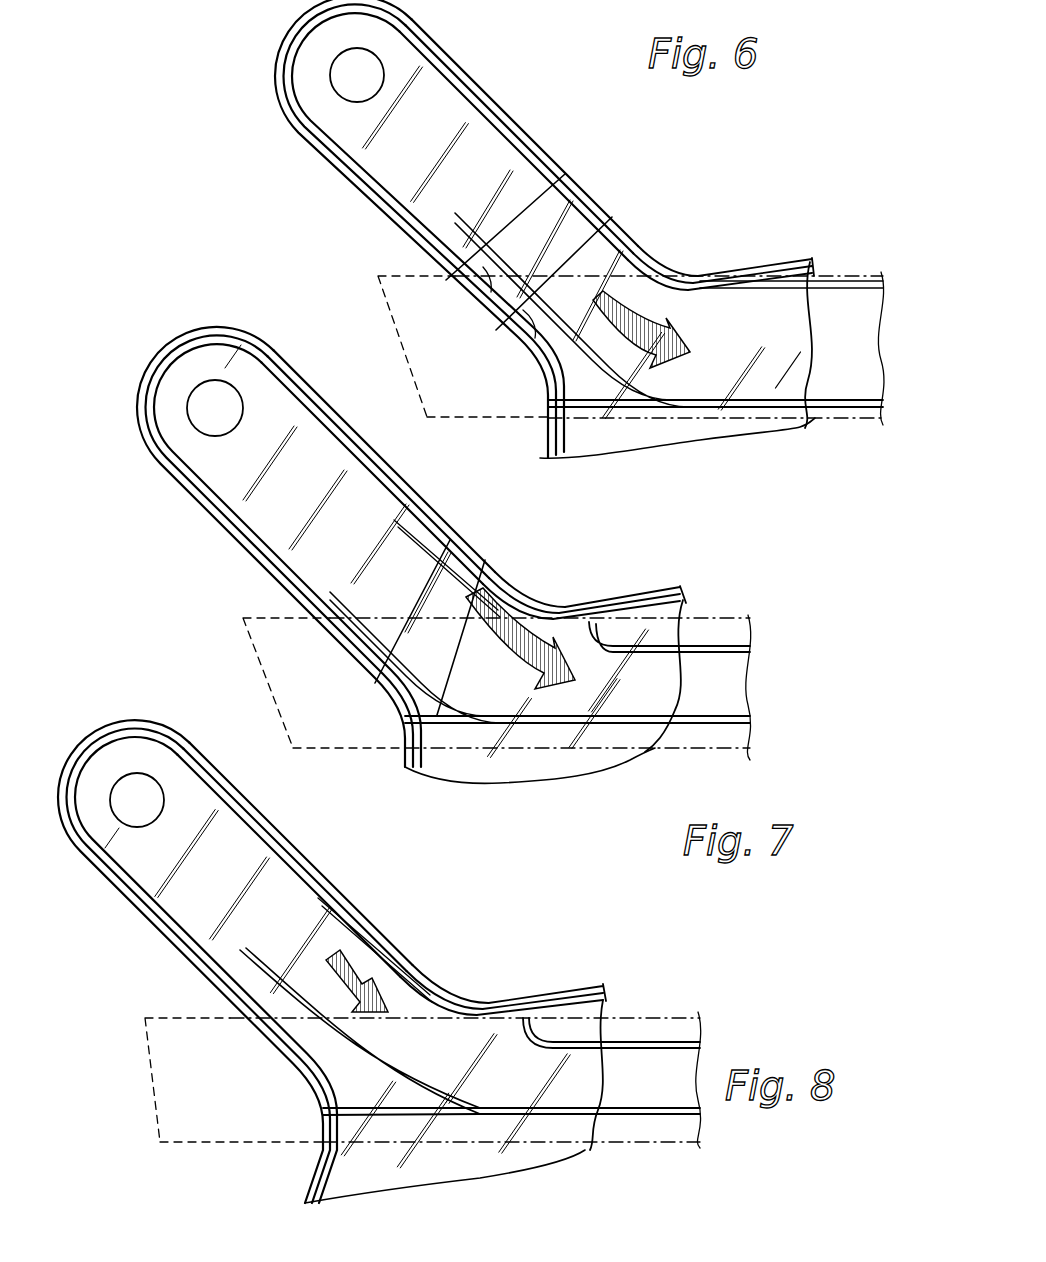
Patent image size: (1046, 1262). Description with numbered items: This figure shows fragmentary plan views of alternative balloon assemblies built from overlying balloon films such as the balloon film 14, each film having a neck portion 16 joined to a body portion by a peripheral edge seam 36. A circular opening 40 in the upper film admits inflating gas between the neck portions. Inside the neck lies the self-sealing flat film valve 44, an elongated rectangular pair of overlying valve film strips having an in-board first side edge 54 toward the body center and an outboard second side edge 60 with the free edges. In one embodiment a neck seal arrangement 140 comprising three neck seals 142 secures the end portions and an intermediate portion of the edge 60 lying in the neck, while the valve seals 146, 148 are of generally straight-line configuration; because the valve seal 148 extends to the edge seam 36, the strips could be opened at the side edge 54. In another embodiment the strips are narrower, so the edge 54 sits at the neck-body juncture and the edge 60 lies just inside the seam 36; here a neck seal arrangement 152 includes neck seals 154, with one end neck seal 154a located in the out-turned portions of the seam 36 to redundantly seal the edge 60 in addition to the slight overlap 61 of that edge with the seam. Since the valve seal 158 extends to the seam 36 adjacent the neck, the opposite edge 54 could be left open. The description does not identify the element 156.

In FIG. 6, the balloon film 14 is at (683, 438).
In FIG. 6, the neck portion 16 is at (490, 110).
In FIG. 7, the neck portion 16 is at (383, 490).
In FIG. 8, the neck portion 16 is at (283, 880).
In FIG. 6, the peripheral seam 36 is at (434, 57).
In FIG. 7, the peripheral seam 36 is at (347, 433).
In FIG. 8, the peripheral seam 36 is at (250, 818).
In FIG. 6, the circular opening 40 is at (338, 94).
In FIG. 7, the circular opening 40 is at (236, 388).
In FIG. 8, the circular opening 40 is at (156, 781).
In FIG. 6, the valve 44 is at (850, 390).
In FIG. 7, the valve 44 is at (728, 685).
In FIG. 8, the valve 44 is at (685, 1085).
In FIG. 6, the first side edge 54 is at (815, 418).
In FIG. 7, the first side edge 54 is at (670, 748).
In FIG. 6, the second side edge 60 is at (477, 293).
In FIG. 7, the second side edge 60 is at (713, 620).
In FIG. 8, the second side edge 60 is at (648, 1018).
In FIG. 7, the overlap 61 is at (597, 593).
In FIG. 6, the neck seal arrangement 140 is at (578, 188).
In FIG. 6, the neck seals 142 is at (505, 352).
In FIG. 6, the valve seal 146 is at (838, 280).
In FIG. 6, the valve seal 148 is at (723, 397).
In FIG. 7, the neck seal arrangement 152 is at (517, 588).
In FIG. 8, the neck seal arrangement 152 is at (421, 967).
In FIG. 7, the neck seals 154 is at (500, 585).
In FIG. 8, the neck seals 154 is at (410, 960).
In FIG. 7, the end neck seal 154a is at (477, 710).
In FIG. 8, the end neck seal 154a is at (372, 1117).
In FIG. 7, the upper layer 156 is at (733, 647).
In FIG. 7, the valve seal 158 is at (720, 723).